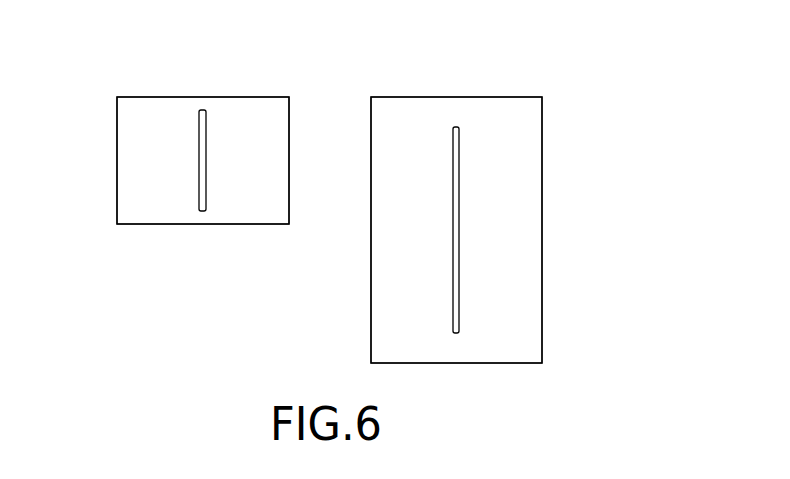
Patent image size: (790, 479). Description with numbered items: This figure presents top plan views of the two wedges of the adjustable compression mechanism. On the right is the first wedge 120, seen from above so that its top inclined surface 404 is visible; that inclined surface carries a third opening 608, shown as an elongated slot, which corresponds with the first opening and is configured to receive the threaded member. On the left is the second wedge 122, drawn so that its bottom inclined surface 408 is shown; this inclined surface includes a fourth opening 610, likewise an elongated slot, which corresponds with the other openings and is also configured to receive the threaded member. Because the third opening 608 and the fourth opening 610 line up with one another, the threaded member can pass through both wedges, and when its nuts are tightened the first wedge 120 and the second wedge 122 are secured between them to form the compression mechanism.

The second module 122 is at (166, 87).
The second housing 408 is at (131, 108).
The second slot 610 is at (203, 142).
The first module 120 is at (515, 89).
The first housing 404 is at (523, 298).
The first slot 608 is at (456, 156).